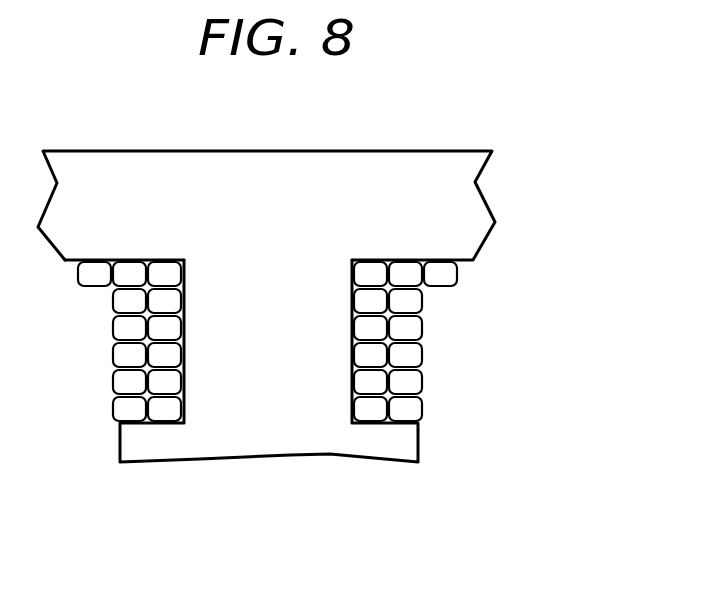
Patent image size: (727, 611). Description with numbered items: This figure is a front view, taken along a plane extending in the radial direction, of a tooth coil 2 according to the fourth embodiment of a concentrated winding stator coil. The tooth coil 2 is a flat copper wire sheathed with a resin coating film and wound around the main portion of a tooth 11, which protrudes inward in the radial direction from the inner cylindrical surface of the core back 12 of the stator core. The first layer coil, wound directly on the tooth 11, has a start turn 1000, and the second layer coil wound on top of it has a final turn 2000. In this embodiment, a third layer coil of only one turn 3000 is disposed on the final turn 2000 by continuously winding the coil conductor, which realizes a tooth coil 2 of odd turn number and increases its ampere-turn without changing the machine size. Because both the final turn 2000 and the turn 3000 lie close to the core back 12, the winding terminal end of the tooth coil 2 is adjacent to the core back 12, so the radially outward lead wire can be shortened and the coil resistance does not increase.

The tooth coil 2 is at (495, 347).
The tooth 11 is at (267, 425).
The core back 12 is at (262, 210).
The start turn 1000 is at (167, 268).
The final turn 2000 is at (407, 270).
The third layer coil turn 3000 is at (452, 273).